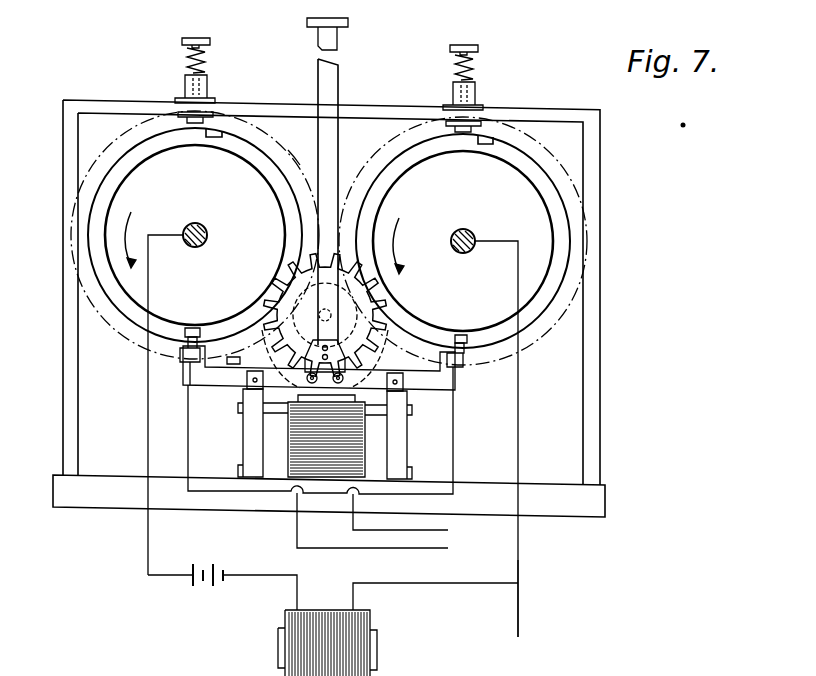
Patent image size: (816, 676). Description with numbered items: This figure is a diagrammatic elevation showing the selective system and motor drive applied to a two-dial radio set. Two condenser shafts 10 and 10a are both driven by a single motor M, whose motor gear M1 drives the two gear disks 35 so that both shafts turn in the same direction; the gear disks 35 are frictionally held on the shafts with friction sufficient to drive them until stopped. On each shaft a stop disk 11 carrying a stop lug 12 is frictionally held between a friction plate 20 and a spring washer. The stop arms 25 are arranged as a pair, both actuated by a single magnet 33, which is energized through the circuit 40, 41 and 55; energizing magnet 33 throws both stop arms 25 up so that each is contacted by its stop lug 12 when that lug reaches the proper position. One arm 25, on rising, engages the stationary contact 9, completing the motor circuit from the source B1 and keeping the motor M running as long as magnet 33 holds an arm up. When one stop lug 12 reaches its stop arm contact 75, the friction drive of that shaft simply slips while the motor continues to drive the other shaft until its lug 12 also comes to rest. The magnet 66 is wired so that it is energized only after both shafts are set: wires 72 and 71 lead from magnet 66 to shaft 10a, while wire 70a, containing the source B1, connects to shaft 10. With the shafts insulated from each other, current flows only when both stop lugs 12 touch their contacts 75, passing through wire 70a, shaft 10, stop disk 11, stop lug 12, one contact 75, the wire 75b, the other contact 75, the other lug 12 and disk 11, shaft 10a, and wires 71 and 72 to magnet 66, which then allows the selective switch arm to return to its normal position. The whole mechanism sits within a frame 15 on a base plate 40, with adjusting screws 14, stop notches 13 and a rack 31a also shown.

The stationary contact 9 is at (233, 364).
The condenser shaft 10 is at (206, 229).
The condenser shaft 10a is at (474, 237).
The stop disk 11 is at (100, 199).
The stop lug 12 is at (195, 328).
The stop notch 13 is at (223, 132).
The adjusting screw 14 is at (199, 118).
The frame 15 is at (591, 291).
The friction plate 20 is at (329, 238).
The stop arm 25 is at (319, 368).
The rack 31a is at (331, 96).
The magnet 33 is at (300, 455).
The gear disk 35 is at (305, 170).
The circuit 40 is at (360, 502).
The circuit 41 is at (402, 531).
The circuit 55 is at (297, 535).
The magnet 66 is at (316, 610).
The wire 70a is at (148, 568).
The wire 71 is at (519, 561).
The wire 72 is at (449, 584).
The stop arm contact 75 is at (181, 358).
The wire 75b is at (188, 450).
The source B1 is at (208, 589).
The motor M is at (325, 318).
The motor gear M1 is at (307, 314).